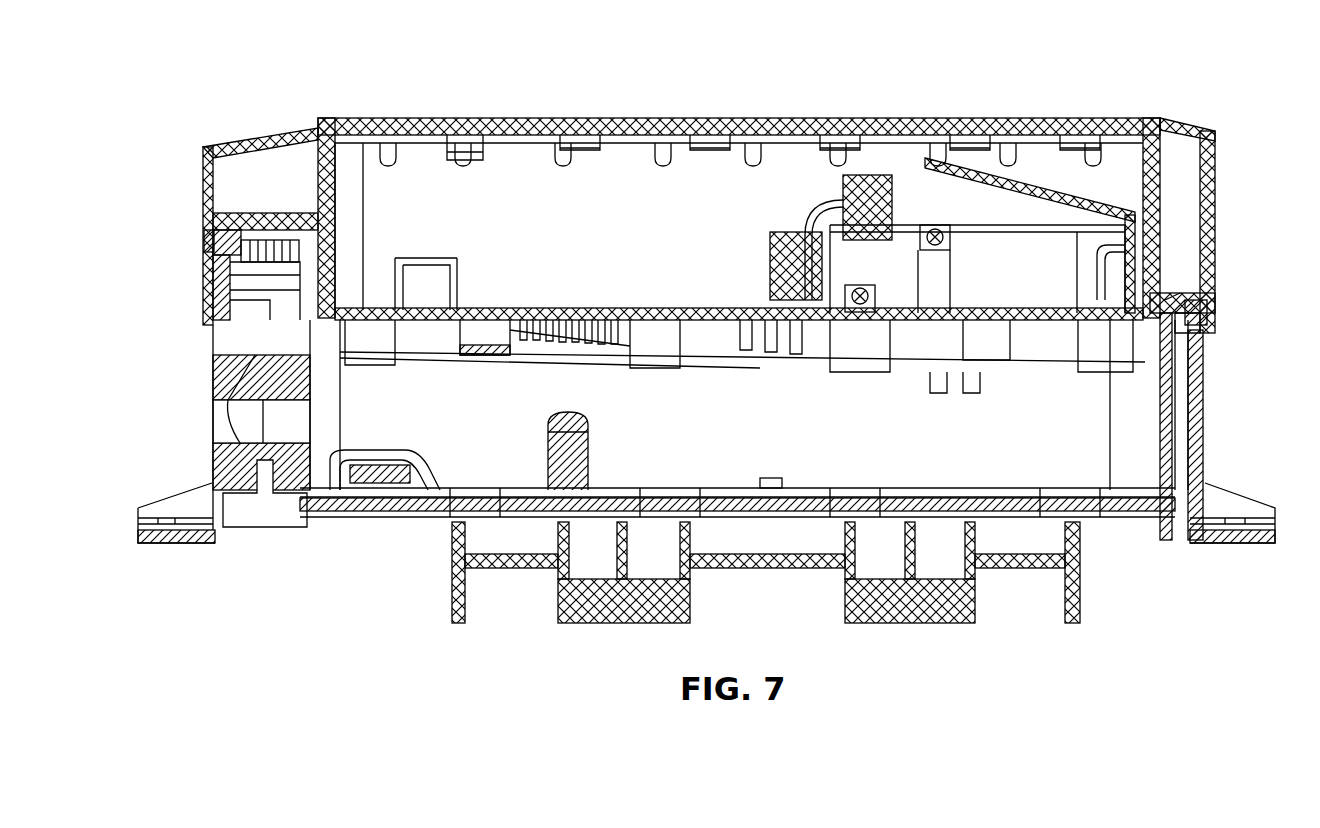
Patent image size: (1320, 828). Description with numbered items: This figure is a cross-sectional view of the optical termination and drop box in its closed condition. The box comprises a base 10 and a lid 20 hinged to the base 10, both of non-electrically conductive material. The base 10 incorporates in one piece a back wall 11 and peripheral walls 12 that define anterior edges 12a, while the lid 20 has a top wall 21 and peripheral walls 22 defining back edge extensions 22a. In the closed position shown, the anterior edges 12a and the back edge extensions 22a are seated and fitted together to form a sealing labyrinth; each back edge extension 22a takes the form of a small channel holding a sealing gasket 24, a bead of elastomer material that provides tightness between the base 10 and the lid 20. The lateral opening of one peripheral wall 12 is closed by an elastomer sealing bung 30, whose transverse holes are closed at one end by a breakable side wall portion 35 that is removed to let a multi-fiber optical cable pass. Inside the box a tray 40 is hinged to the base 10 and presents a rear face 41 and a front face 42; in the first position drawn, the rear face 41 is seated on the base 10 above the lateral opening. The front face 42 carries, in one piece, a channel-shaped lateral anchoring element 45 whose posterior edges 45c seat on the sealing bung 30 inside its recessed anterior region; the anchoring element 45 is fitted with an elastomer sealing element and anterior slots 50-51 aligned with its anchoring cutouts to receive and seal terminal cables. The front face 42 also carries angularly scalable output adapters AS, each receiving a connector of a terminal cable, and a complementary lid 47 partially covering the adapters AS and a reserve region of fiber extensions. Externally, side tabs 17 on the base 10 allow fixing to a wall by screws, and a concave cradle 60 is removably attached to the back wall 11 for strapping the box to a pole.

The base 10 is at (729, 432).
The back wall 11 is at (899, 492).
The peripheral walls 12 is at (1175, 448).
The anterior edge 12a is at (1172, 303).
The side tabs 17 is at (147, 545).
The lid 20 is at (758, 223).
The top wall 21 is at (694, 136).
The peripheral walls 22 is at (581, 195).
The back edge extension 22a is at (1212, 340).
The sealing gasket 24 is at (203, 236).
The elastomer sealing bung 30 is at (222, 362).
The breakable side wall portion 35 is at (325, 424).
The tray 40 is at (516, 289).
The rear face 41 is at (776, 323).
The front face 42 is at (618, 304).
The lateral anchoring element 45 is at (264, 402).
The posterior edges 45c is at (300, 424).
The complementary lid 47 is at (1042, 178).
The elastomer sealing element and anterior slots 50-51 is at (250, 232).
The concave cradle 60 is at (938, 626).
The angularly scalable output adapters AS is at (896, 201).